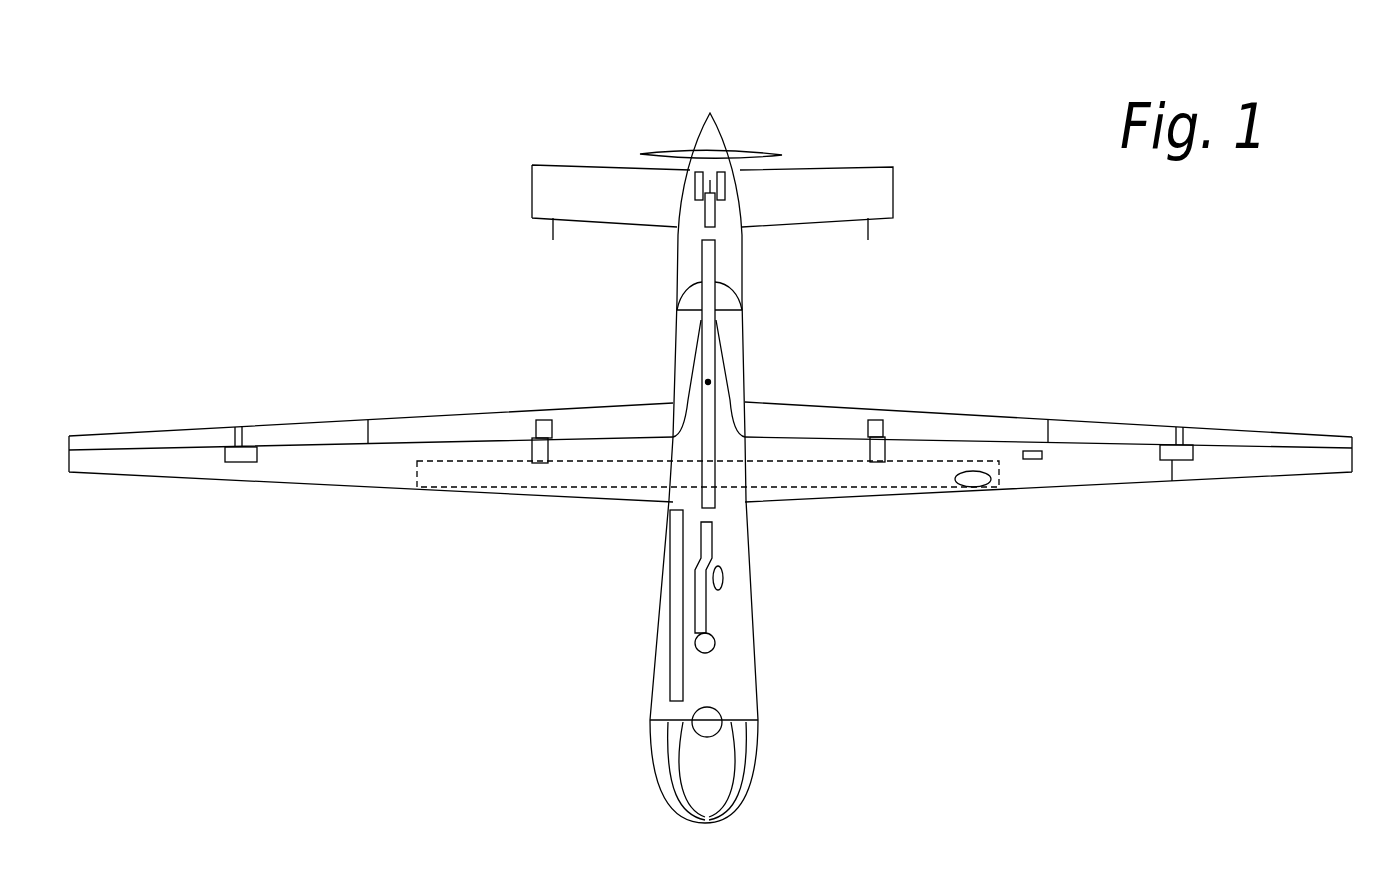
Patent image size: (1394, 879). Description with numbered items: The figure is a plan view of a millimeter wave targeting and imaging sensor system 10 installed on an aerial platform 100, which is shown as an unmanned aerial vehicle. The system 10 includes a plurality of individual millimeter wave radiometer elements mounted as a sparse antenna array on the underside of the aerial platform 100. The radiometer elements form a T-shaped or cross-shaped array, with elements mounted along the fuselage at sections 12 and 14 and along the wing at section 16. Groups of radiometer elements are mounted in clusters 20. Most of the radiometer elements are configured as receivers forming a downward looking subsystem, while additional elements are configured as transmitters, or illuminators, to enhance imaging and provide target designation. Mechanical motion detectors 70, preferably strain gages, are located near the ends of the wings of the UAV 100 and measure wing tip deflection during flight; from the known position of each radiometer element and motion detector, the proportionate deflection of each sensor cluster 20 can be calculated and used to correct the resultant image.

The millimeter wave targeting and imaging sensor system 10 is at (612, 800).
The aerial platform 100 is at (867, 153).
The fuselage section 12 is at (663, 615).
The fuselage section 14 is at (715, 513).
The wing section 16 is at (913, 460).
The cluster 20 is at (975, 481).
The mechanical motion detector 70 is at (243, 455).